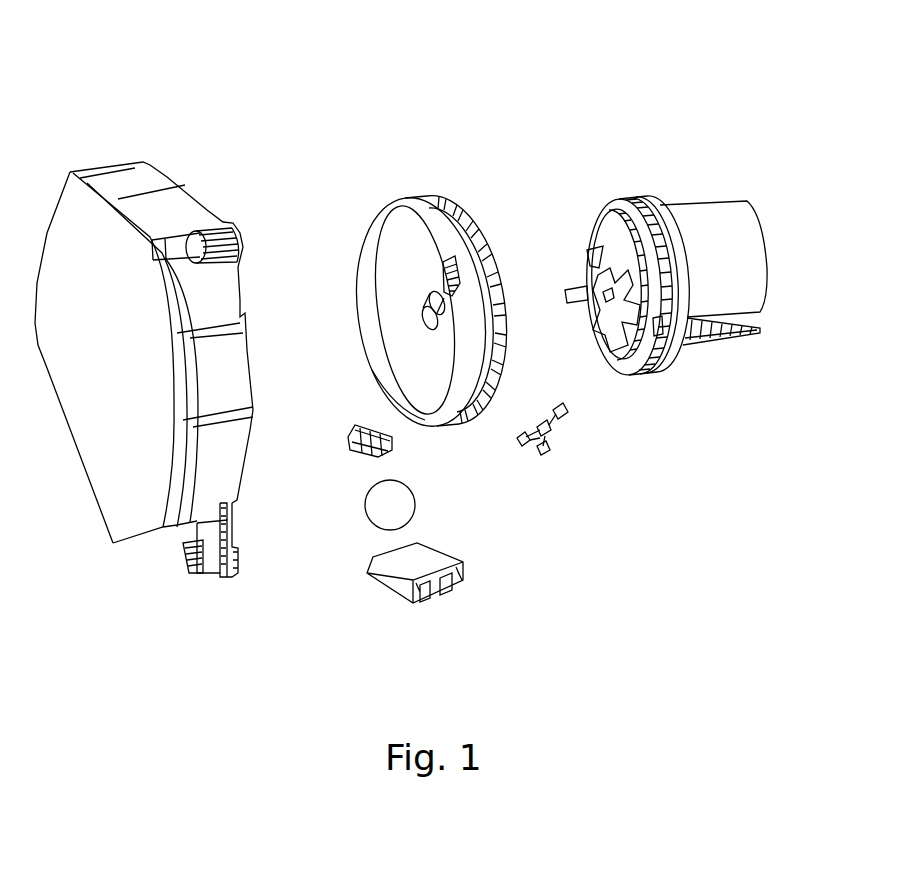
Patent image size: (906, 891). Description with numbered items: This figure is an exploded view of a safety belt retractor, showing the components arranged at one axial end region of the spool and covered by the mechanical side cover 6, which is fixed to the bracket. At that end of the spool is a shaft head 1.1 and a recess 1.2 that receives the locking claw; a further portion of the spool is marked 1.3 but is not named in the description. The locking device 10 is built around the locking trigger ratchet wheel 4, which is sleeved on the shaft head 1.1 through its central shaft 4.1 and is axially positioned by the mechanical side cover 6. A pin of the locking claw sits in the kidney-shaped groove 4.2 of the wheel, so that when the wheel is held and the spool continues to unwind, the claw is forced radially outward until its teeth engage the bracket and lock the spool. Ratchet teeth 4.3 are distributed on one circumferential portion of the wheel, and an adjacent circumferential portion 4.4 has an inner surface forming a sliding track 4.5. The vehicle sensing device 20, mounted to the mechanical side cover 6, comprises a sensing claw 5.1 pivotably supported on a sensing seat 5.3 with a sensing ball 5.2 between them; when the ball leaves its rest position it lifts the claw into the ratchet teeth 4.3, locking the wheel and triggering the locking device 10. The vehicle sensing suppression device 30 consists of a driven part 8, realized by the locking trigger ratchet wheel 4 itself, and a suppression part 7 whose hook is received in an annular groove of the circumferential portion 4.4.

The locking device 10 is at (584, 100).
The shaft head 1.1 is at (567, 297).
The recess 1.2 is at (622, 203).
The motor body 1.3 is at (716, 238).
The locking trigger ratchet wheel 4 is at (402, 252).
The central shaft 4.1 is at (430, 310).
The kidney-shaped groove 4.2 is at (452, 278).
The ratchet teeth 4.3 is at (416, 196).
The circumferential portion 4.4 is at (488, 273).
The sliding track 4.5 is at (386, 364).
The mechanical side cover 6 is at (150, 178).
The suppression part 7 is at (562, 420).
The driven part 8 is at (500, 333).
The vehicle sensing device 20 is at (351, 544).
The sensing claw 5.1 is at (357, 437).
The sensing ball 5.2 is at (400, 500).
The sensing seat 5.3 is at (450, 568).
The vehicle sensing suppression device 30 is at (575, 455).